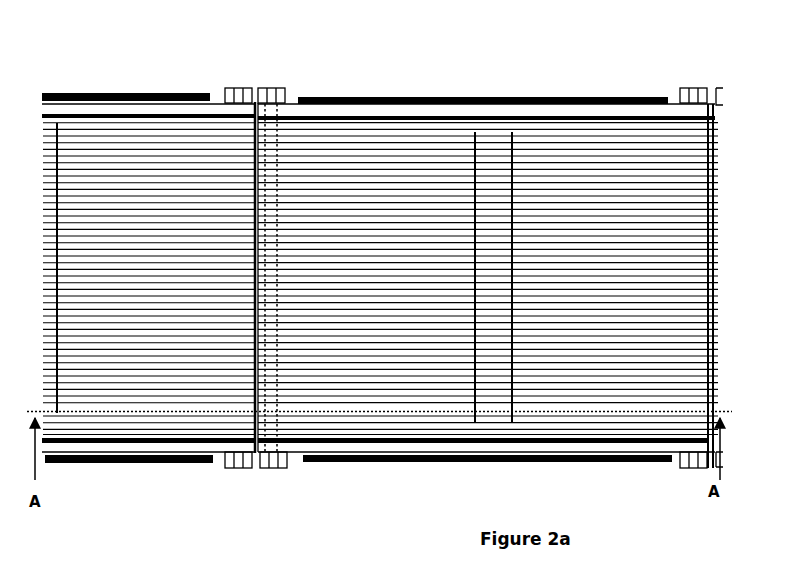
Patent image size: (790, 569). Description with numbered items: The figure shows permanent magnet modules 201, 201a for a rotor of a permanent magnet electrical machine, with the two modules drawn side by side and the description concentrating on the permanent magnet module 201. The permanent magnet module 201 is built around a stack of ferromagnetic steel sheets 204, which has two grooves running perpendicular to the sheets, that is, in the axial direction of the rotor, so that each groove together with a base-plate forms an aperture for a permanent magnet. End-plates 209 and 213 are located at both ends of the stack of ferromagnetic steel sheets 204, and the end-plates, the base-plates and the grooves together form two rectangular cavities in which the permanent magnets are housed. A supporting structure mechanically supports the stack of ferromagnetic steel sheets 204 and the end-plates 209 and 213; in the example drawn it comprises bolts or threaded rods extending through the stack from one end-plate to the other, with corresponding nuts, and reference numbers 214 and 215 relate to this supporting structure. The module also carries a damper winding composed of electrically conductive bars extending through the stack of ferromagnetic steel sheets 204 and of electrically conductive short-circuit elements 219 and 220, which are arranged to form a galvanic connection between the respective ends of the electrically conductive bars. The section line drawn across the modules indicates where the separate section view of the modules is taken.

The permanent magnet module 201a is at (130, 80).
The permanent magnet module 201 is at (486, 272).
The electrically conductive short-circuit element 220 is at (403, 100).
The electrically conductive short-circuit element 219 is at (347, 466).
The supporting structure 214 is at (273, 88).
The supporting structure 215 is at (261, 470).
The end-plate 213 is at (298, 112).
The end-plate 209 is at (305, 446).
The stack of ferromagnetic steel sheets 204 is at (557, 279).